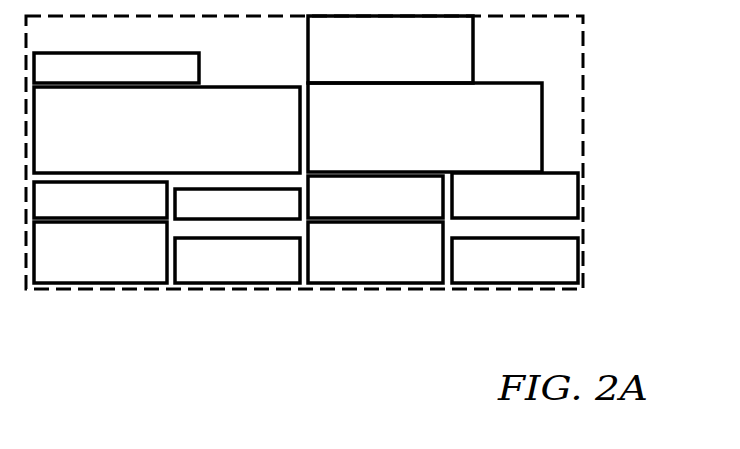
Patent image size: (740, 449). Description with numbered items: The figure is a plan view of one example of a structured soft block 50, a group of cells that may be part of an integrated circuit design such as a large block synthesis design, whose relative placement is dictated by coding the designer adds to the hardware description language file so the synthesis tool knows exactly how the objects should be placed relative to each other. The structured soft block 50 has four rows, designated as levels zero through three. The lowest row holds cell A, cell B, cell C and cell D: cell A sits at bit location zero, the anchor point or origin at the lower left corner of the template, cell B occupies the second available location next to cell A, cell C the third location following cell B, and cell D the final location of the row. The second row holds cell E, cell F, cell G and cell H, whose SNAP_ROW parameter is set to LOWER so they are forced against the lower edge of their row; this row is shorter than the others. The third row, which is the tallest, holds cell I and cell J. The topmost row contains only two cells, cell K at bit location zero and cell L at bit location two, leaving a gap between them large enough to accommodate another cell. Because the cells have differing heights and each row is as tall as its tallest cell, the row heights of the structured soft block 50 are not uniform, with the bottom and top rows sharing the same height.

The structured soft block 50 is at (583, 55).
The cell A is at (100, 252).
The cell B is at (237, 260).
The cell C is at (375, 252).
The cell D is at (515, 260).
The cell E is at (100, 200).
The cell F is at (237, 204).
The cell G is at (375, 197).
The cell H is at (515, 195).
The cell I is at (167, 130).
The cell J is at (425, 127).
The cell K is at (116, 67).
The cell L is at (390, 49).